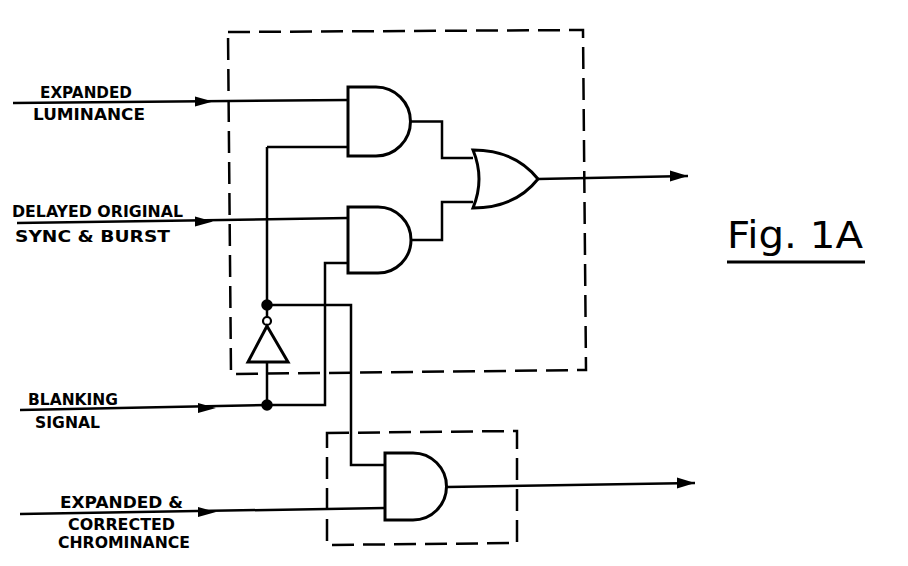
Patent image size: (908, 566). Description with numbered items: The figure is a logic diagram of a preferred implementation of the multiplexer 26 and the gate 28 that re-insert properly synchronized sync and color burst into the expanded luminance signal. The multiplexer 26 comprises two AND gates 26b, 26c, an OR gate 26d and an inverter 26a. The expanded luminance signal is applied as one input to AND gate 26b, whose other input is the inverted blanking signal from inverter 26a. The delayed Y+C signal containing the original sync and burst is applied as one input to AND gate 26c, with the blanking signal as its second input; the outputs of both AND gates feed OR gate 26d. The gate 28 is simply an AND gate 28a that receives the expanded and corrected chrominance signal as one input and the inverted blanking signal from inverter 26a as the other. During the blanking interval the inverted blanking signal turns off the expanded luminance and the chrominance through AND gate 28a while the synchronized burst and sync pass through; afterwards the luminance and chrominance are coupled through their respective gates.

The multiplexer 26 is at (583, 80).
The inverter 26a is at (253, 345).
The AND gate 26b is at (397, 93).
The AND gate 26c is at (405, 262).
The OR gate 26d is at (503, 150).
The gate 28 is at (518, 431).
The AND gate 28a is at (440, 507).